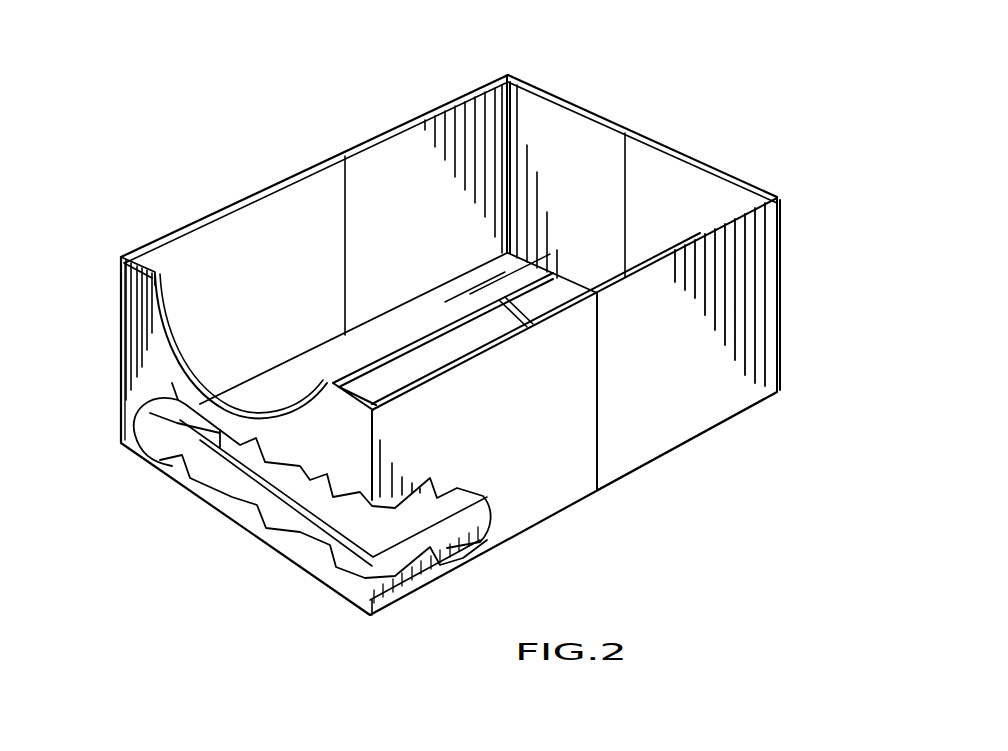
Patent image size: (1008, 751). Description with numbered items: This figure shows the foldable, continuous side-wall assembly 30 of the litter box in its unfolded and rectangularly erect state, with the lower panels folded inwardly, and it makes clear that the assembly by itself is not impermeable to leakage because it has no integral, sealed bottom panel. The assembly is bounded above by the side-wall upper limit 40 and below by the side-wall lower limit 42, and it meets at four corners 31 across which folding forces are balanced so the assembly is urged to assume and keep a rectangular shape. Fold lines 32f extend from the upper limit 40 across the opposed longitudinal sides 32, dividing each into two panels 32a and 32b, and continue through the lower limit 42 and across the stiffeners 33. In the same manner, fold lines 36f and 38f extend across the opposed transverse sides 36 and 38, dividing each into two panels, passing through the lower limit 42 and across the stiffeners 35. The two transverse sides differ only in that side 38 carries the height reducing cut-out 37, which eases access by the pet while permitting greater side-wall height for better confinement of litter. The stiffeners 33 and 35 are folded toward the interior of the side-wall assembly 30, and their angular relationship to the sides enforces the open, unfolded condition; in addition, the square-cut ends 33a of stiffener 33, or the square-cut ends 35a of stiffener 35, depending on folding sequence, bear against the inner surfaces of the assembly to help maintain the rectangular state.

The side-wall assembly 30 is at (258, 105).
The corners 31 is at (508, 110).
The longitudinal sides 32 is at (405, 112).
The panel 32a is at (350, 146).
The panel 32b is at (275, 181).
The fold lines 32f is at (347, 192).
The stiffeners 33 is at (350, 372).
The square-cut ends 33a is at (549, 275).
The stiffeners 35 is at (512, 317).
The square-cut ends 35a is at (177, 423).
The transverse side 36 is at (567, 150).
The fold line 36f is at (625, 170).
The height reducing cut-out 37 is at (165, 366).
The transverse side 38 is at (135, 283).
The fold line 38f is at (368, 345).
The side-wall upper limit 40 is at (778, 208).
The side-wall lower limit 42 is at (735, 415).